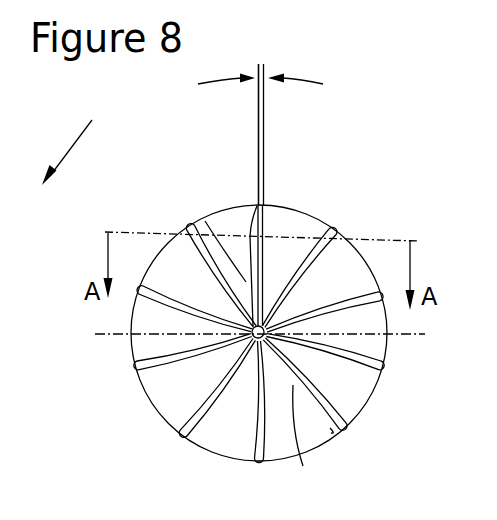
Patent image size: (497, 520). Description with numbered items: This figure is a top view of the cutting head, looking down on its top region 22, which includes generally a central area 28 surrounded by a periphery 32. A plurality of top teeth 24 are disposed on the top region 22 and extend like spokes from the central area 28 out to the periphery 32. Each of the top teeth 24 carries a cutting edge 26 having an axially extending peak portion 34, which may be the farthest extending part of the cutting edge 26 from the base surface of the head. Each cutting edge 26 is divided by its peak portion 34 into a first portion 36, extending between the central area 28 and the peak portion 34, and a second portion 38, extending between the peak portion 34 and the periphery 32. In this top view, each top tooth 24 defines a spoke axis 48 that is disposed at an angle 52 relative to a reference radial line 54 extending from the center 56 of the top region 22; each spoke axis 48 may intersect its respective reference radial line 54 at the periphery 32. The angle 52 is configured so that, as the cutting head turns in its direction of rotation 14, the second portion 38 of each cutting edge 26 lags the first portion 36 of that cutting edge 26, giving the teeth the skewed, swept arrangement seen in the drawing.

The direction of rotation 14 is at (70, 143).
The top region 22 is at (227, 417).
The top teeth 24 is at (263, 272).
The cutting edge 26 is at (210, 245).
The central area 28 is at (252, 337).
The periphery 32 is at (258, 461).
The peak portion 34 is at (318, 400).
The first portion 36 is at (312, 441).
The second portion 38 is at (331, 429).
The spoke axis 48 is at (267, 128).
The angle 52 is at (265, 68).
The reference radial line 54 is at (259, 101).
The center 56 is at (251, 341).